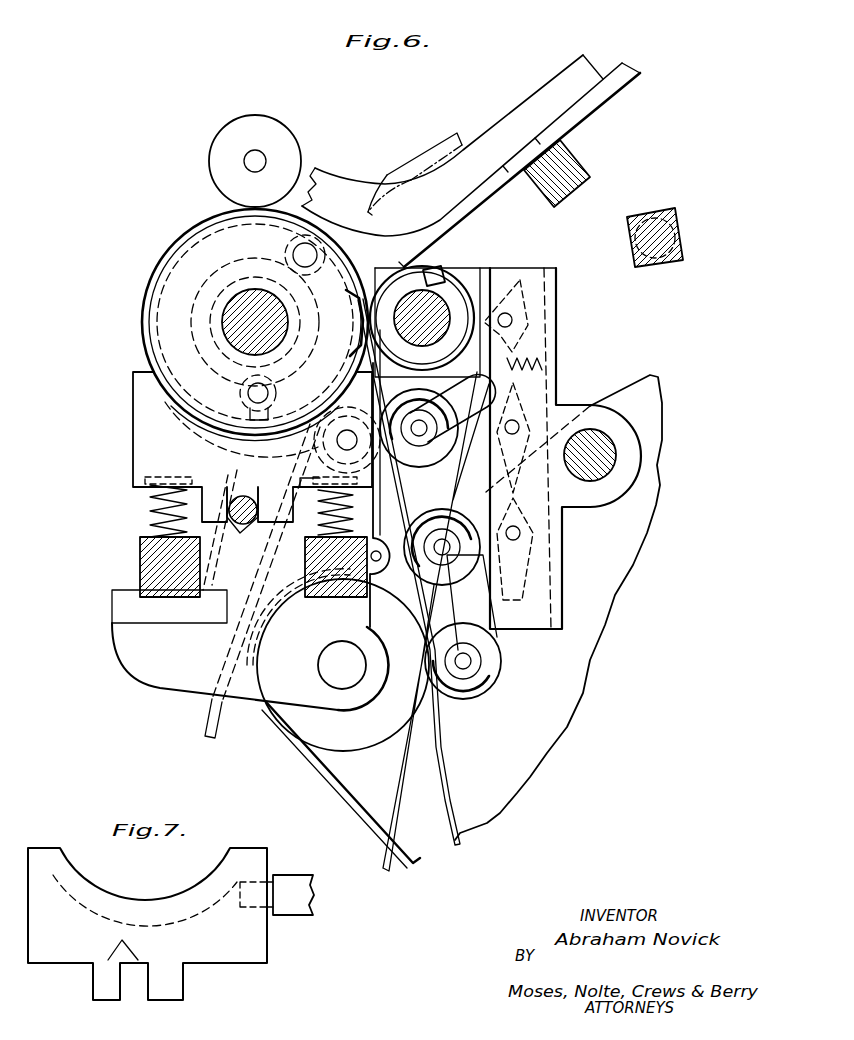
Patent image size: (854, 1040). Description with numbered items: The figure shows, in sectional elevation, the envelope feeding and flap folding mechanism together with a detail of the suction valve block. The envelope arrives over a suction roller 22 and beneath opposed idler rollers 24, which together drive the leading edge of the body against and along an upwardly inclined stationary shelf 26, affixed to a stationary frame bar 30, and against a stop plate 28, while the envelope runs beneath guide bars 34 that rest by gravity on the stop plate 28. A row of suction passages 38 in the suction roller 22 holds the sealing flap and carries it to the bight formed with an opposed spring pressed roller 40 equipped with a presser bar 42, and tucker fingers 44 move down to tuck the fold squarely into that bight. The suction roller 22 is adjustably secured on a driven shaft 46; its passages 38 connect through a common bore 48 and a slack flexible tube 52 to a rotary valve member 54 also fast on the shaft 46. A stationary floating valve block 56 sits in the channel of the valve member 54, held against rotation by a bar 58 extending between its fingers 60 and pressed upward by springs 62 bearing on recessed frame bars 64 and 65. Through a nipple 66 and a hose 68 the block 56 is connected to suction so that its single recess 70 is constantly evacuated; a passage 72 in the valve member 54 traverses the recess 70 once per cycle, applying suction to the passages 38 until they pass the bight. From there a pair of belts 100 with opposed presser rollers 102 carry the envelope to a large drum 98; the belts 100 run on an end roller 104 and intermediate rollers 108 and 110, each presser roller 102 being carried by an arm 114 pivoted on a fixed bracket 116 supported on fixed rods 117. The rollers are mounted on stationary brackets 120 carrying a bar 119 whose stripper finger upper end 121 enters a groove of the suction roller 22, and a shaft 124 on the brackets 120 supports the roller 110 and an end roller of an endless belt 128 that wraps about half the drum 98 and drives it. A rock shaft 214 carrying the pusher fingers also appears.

In FIG. 6, the suction roller 22 is at (348, 263).
In FIG. 6, the idler rollers 24 is at (228, 178).
In FIG. 6, the stationary shelf 26 is at (480, 214).
In FIG. 6, the stop plate 28 is at (513, 160).
In FIG. 6, the frame bar 30 is at (572, 166).
In FIG. 6, the guide bars 34 is at (532, 107).
In FIG. 6, the suction passages 38 is at (312, 228).
In FIG. 6, the spring pressed roller 40 is at (465, 283).
In FIG. 6, the presser bar 42 is at (437, 270).
In FIG. 6, the tucker fingers 44 is at (405, 167).
In FIG. 6, the driven shaft 46 is at (240, 330).
In FIG. 6, the common bore 48 is at (295, 248).
In FIG. 6, the flexible tube 52 is at (193, 330).
In FIG. 6, the rotary valve member 54 is at (172, 270).
In FIG. 6, the floating valve block 56 is at (133, 425).
In FIG. 7, the floating valve block 56 is at (200, 960).
In FIG. 6, the bar 58 is at (240, 480).
In FIG. 6, the fingers 60 is at (243, 526).
In FIG. 7, the fingers 60 is at (150, 972).
In FIG. 6, the springs 62 is at (148, 511).
In FIG. 6, the recessed frame bar 64 is at (170, 598).
In FIG. 6, the recessed frame bar 65 is at (330, 598).
In FIG. 7, the nipple 66 is at (249, 910).
In FIG. 7, the hose 68 is at (290, 882).
In FIG. 6, the recess 70 is at (188, 418).
In FIG. 7, the recess 70 is at (68, 898).
In FIG. 6, the passage 72 is at (242, 396).
In FIG. 6, the drum 98 is at (500, 808).
In FIG. 6, the belts 100 is at (216, 732).
In FIG. 6, the presser rollers 102 is at (408, 456).
In FIG. 6, the end roller 104 is at (322, 456).
In FIG. 6, the intermediate roller 108 is at (387, 598).
In FIG. 6, the intermediate roller 110 is at (355, 740).
In FIG. 6, the arm 114 is at (540, 332).
In FIG. 6, the fixed bracket 116 is at (543, 366).
In FIG. 6, the fixed rods 117 is at (580, 470).
In FIG. 6, the bar 119 is at (300, 490).
In FIG. 6, the stationary brackets 120 is at (562, 548).
In FIG. 6, the upper end of stripper finger 121 is at (395, 344).
In FIG. 6, the shaft 124 is at (318, 663).
In FIG. 6, the endless belt 128 is at (425, 860).
In FIG. 6, the rock shaft 214 is at (685, 237).